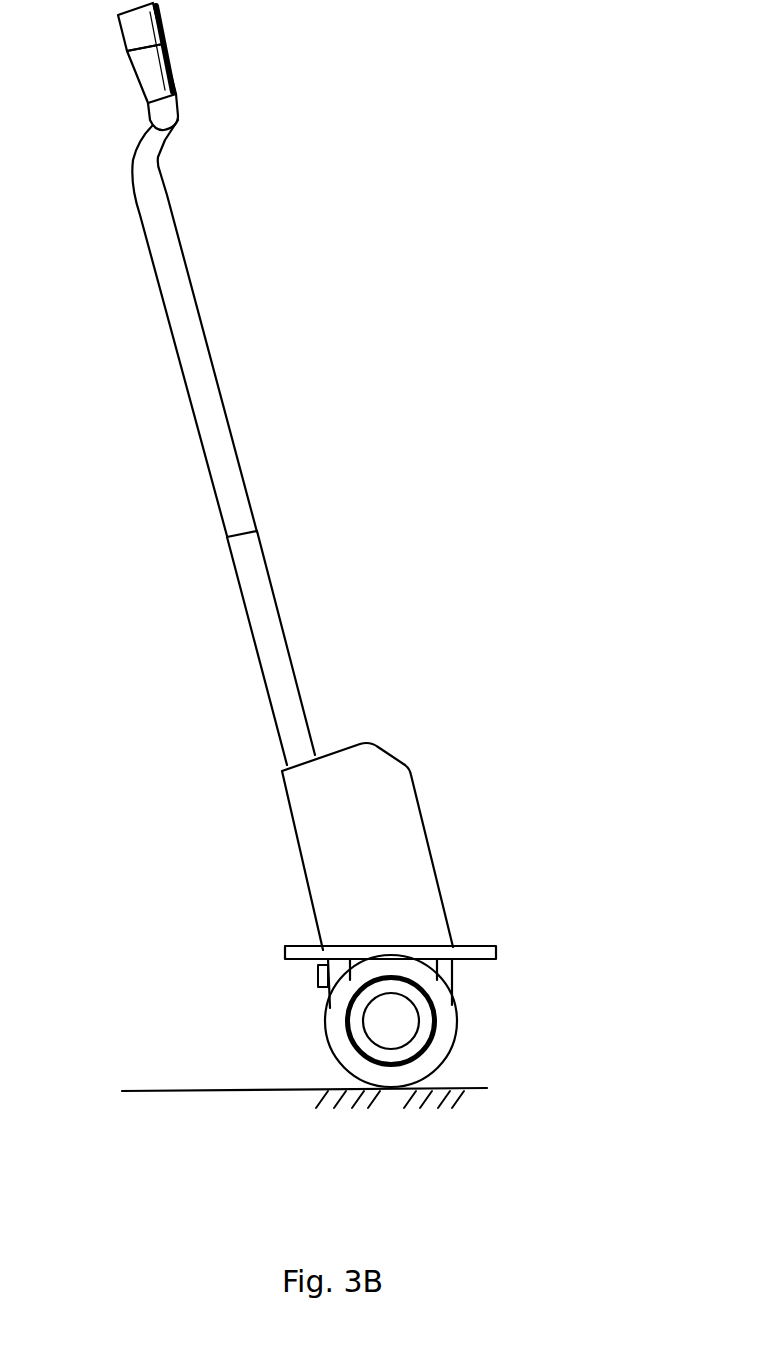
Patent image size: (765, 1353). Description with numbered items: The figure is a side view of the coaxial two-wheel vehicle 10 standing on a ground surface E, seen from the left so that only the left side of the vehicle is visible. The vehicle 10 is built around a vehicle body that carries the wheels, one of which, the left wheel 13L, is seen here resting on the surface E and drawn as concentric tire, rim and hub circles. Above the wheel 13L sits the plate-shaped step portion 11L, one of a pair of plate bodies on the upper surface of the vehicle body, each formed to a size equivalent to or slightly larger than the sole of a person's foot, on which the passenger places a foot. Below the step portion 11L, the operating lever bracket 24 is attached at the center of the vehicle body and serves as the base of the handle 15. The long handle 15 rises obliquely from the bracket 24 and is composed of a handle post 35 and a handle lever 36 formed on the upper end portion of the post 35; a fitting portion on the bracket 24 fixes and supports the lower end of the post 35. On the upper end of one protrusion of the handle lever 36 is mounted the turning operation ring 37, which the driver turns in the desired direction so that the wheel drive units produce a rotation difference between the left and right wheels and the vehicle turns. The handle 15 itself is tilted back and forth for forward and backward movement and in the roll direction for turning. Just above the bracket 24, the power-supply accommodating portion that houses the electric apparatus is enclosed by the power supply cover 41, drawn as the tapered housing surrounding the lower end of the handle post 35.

The coaxial two-wheel vehicle 10 is at (409, 490).
The handle 15 is at (215, 286).
The turning operation ring 37 is at (163, 22).
The handle lever 36 is at (174, 78).
The handle post 35 is at (273, 613).
The power supply cover 41 is at (403, 795).
The step portion 11L is at (478, 946).
The operating lever bracket 24 is at (325, 980).
The wheel 13L is at (393, 1086).
The ground surface E is at (213, 1090).